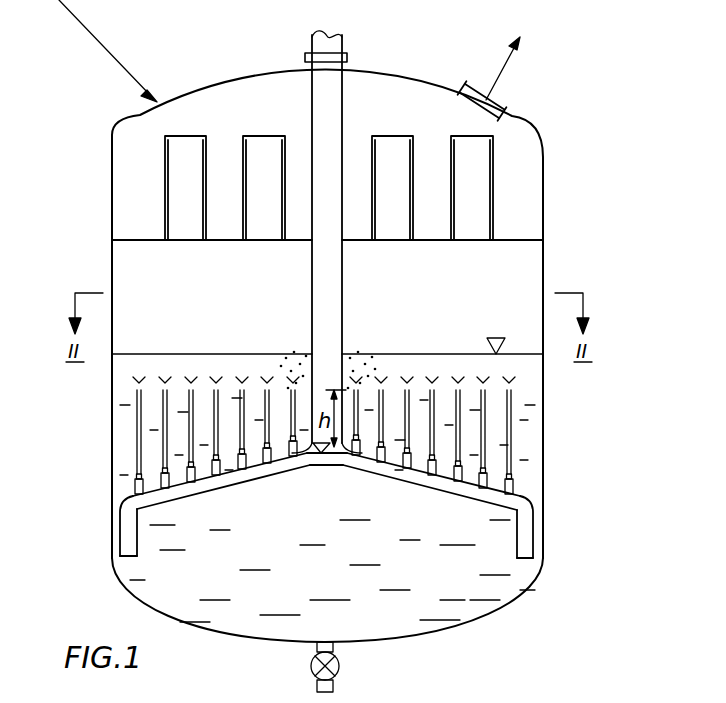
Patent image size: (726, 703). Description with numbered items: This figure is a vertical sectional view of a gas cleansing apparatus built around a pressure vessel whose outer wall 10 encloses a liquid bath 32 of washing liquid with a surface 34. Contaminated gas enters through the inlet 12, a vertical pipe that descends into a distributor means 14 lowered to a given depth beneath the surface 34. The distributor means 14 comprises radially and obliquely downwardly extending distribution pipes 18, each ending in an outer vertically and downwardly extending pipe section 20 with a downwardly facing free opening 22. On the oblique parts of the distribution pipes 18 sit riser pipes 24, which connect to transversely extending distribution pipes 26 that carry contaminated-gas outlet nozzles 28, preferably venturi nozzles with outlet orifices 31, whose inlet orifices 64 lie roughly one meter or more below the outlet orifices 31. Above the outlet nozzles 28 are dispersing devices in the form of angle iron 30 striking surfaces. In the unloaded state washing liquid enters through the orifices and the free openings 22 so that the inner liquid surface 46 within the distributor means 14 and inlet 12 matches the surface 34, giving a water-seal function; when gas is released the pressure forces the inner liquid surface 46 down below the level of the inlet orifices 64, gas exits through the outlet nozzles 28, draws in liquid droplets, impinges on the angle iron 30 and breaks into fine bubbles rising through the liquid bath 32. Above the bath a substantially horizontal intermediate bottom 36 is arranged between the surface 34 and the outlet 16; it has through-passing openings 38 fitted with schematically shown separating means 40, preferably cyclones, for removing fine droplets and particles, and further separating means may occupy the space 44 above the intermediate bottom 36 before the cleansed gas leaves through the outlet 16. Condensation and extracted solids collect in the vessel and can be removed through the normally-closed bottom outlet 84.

The outer wall 10 is at (546, 170).
The inlet 12 is at (344, 46).
The distributor means 14 is at (340, 543).
The outlet 16 is at (479, 87).
The distribution pipes 18 is at (191, 492).
The outer pipe section 20 is at (130, 527).
The free opening 22 is at (120, 573).
The riser pipes 24 is at (197, 468).
The transversely extending distribution pipes 26 is at (136, 470).
The outlet nozzles 28 is at (163, 410).
The angle iron 30 is at (191, 378).
The outlet orifices 31 is at (293, 390).
The liquid bath 32 is at (361, 593).
The surface 34 is at (481, 352).
The intermediate bottom 36 is at (224, 241).
The through-passing openings 38 is at (185, 240).
The separating means 40 is at (452, 162).
The space 44 is at (292, 115).
The inner liquid surface 46 is at (324, 460).
The inlet orifices 64 is at (286, 460).
The bottom outlet 84 is at (311, 666).